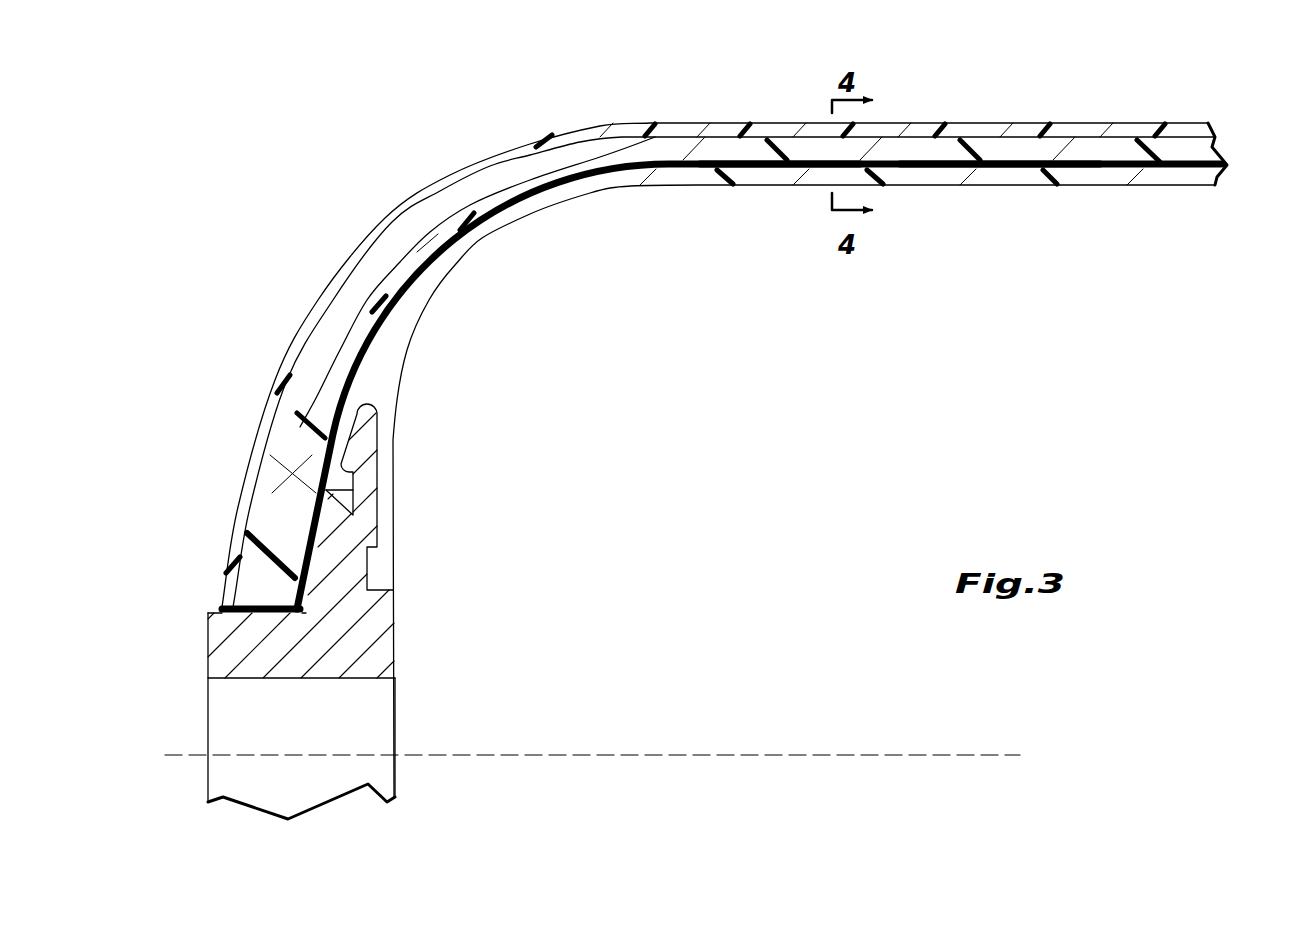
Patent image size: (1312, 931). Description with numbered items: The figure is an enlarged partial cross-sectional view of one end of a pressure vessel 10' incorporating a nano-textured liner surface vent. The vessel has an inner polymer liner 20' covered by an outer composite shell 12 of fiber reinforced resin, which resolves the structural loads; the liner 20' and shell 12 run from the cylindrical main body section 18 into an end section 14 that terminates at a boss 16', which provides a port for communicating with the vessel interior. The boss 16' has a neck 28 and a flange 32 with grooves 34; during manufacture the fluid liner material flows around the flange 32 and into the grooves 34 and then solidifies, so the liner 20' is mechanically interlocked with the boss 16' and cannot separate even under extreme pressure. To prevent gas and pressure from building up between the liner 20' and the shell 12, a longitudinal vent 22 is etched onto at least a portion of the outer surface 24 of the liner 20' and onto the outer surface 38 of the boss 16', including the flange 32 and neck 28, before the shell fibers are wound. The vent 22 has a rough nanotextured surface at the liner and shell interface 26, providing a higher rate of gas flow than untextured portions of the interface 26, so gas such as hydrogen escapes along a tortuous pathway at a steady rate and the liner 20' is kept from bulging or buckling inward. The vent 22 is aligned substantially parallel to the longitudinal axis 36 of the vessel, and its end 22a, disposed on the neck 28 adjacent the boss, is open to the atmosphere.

The pressure vessel 10' is at (207, 200).
The composite shell 12 is at (1127, 152).
The end section 14 is at (384, 217).
The boss 16' is at (261, 740).
The main body section 18 is at (976, 126).
The liner 20' is at (826, 483).
The longitudinal vent 22 is at (1232, 165).
The end of vent 22a is at (222, 610).
The outer surface of liner 24 is at (1010, 172).
The liner and shell interface 26 is at (758, 178).
The neck 28 is at (233, 655).
The flange 32 is at (343, 531).
The grooves 34 is at (352, 490).
The longitudinal axis 36 is at (175, 760).
The first outer surface 38 is at (262, 616).